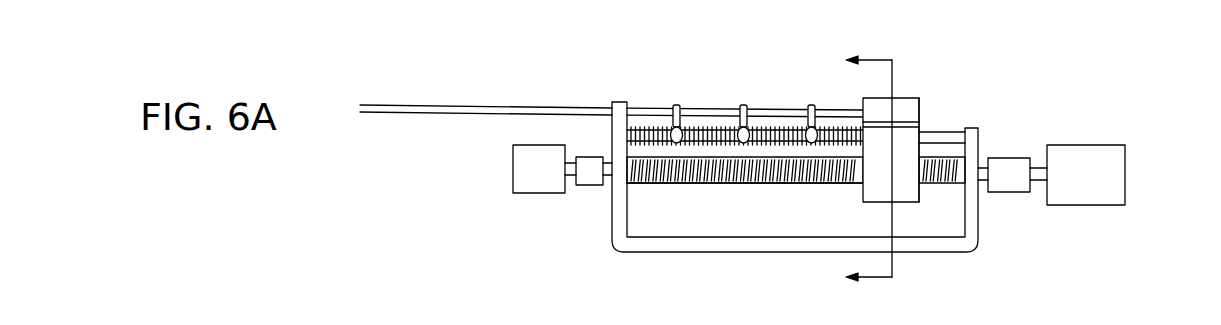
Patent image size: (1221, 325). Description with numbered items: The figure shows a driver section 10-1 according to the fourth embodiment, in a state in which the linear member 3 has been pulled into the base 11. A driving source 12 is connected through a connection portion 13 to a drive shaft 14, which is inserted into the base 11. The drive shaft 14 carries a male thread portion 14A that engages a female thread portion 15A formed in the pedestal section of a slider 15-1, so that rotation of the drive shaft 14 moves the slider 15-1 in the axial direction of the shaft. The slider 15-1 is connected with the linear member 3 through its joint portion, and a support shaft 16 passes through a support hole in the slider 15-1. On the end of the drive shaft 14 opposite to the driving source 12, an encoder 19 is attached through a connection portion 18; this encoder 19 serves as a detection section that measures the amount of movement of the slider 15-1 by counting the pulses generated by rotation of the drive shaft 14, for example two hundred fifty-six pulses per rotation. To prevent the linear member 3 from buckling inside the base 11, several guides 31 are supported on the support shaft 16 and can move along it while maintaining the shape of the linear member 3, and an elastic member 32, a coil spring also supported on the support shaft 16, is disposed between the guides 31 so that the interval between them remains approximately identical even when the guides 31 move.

The driver section 10-1 is at (450, 65).
The linear member 3 is at (435, 113).
The base 11 is at (625, 244).
The driving source 12 is at (1092, 206).
The connection portion 13 is at (1010, 193).
The drive shaft 14 is at (712, 184).
The male thread portion 14A is at (763, 185).
The slider 15-1 is at (905, 97).
The female thread portion 15A is at (919, 171).
The support shaft 16 is at (947, 132).
The connection portion 18 is at (589, 186).
The encoder 19 is at (535, 192).
The guide 31 is at (677, 106).
The elastic member 32 is at (718, 128).